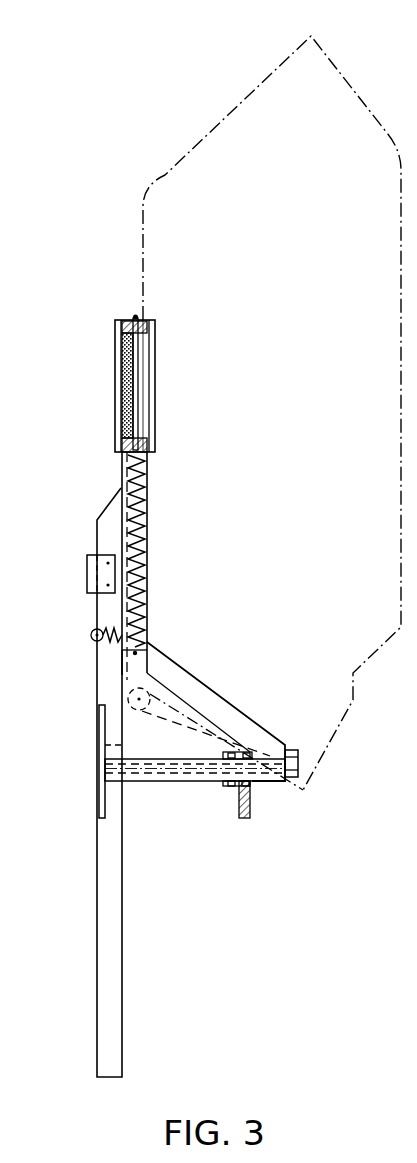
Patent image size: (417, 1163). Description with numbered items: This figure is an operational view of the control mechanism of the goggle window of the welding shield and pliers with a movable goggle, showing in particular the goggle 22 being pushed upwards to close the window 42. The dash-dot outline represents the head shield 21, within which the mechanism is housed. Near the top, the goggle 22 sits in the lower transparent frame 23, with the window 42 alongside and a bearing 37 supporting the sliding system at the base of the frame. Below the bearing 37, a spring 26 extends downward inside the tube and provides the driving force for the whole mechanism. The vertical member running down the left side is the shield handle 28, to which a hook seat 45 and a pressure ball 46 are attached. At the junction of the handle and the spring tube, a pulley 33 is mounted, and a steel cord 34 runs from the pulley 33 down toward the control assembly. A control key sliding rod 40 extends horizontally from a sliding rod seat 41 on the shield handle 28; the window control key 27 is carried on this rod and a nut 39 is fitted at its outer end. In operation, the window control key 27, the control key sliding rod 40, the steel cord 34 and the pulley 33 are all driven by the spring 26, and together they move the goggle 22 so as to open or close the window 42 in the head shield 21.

The head shield 21 is at (178, 187).
The goggle 22 is at (122, 418).
The lower transparent frame 23 is at (117, 400).
The window 42 is at (132, 352).
The bearing 37 is at (152, 451).
The spring 26 is at (141, 488).
The shield handle 28 is at (120, 912).
The hook seat 45 is at (97, 555).
The pressure ball 46 is at (95, 630).
The pulley 33 is at (128, 697).
The steel cord 34 is at (197, 731).
The sliding rod seat 41 is at (100, 810).
The control key sliding rod 40 is at (148, 768).
The window control key 27 is at (250, 798).
The nut 39 is at (312, 774).